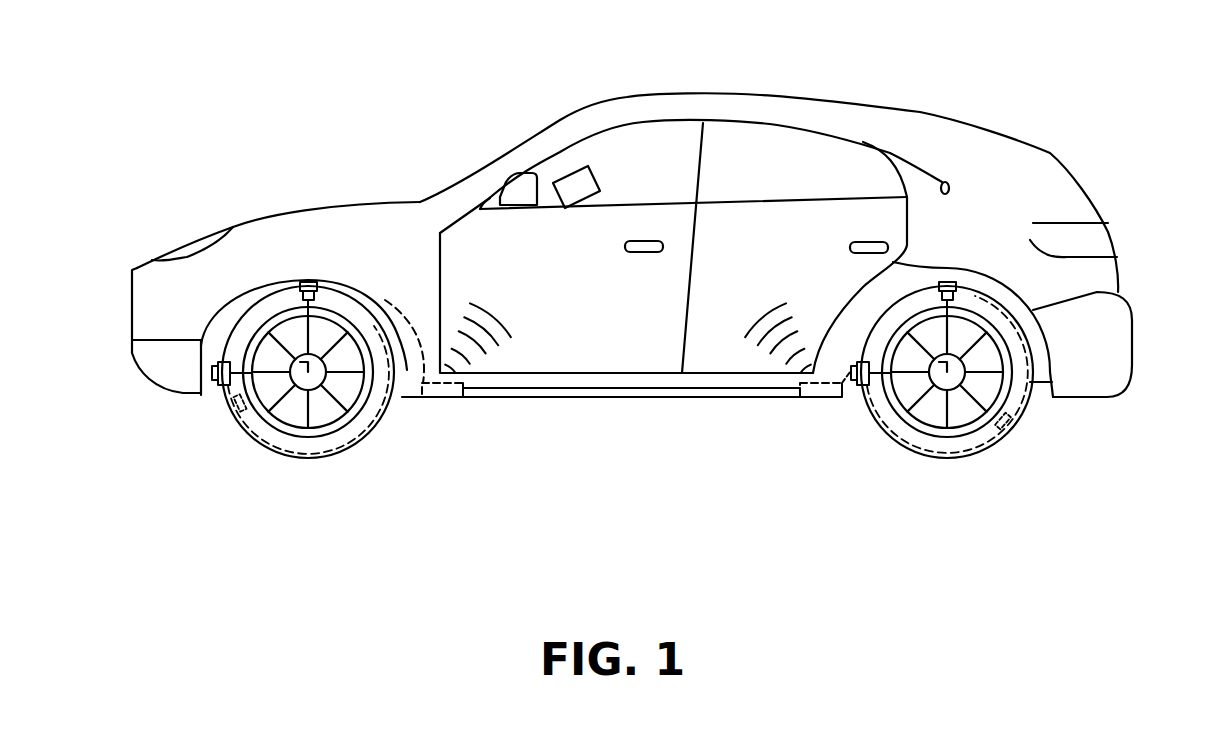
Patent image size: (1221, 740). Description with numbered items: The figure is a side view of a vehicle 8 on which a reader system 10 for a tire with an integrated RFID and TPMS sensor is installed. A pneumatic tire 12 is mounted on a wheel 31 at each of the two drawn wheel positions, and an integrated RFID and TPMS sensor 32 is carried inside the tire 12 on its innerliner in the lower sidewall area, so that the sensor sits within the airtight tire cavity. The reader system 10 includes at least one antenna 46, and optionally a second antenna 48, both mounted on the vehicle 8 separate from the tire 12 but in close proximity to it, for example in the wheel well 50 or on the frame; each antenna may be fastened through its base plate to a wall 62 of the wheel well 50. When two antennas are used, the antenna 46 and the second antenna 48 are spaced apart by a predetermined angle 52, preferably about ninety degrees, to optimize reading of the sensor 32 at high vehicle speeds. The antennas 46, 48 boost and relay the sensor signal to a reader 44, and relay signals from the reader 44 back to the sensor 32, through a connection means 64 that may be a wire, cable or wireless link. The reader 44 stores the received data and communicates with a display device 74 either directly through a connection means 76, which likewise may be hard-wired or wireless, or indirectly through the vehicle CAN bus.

The vehicle 8 is at (240, 212).
The reader system 10 is at (428, 522).
The pneumatic tire 12 is at (292, 462).
The wheel 31 is at (327, 423).
The integrated RFID and TPMS sensor 32 is at (237, 412).
The reader 44 is at (463, 388).
The antenna 46 is at (307, 280).
The second antenna 48 is at (212, 377).
The wheel well 50 is at (403, 338).
The predetermined angle 52 is at (300, 362).
The wall of the wheel well 62 is at (400, 330).
The connection means 64 is at (327, 290).
The display device 74 is at (570, 165).
The connection means 76 is at (493, 313).